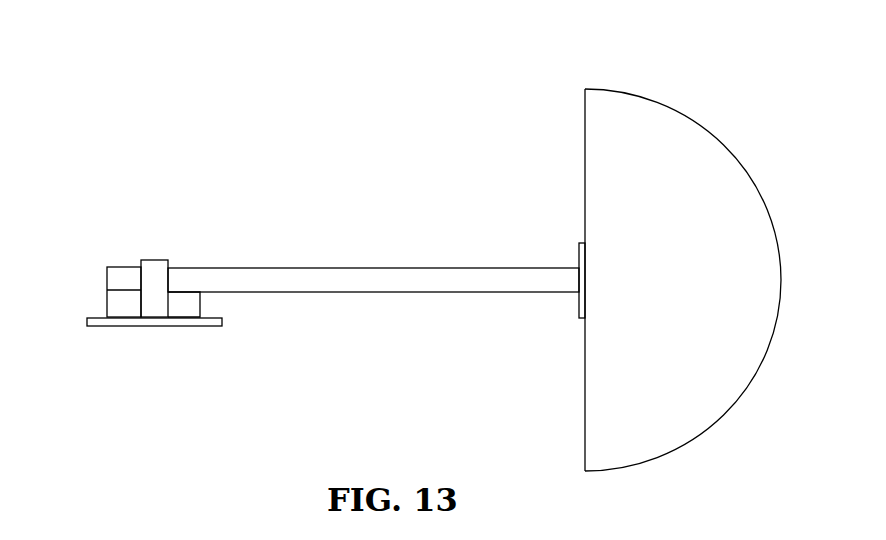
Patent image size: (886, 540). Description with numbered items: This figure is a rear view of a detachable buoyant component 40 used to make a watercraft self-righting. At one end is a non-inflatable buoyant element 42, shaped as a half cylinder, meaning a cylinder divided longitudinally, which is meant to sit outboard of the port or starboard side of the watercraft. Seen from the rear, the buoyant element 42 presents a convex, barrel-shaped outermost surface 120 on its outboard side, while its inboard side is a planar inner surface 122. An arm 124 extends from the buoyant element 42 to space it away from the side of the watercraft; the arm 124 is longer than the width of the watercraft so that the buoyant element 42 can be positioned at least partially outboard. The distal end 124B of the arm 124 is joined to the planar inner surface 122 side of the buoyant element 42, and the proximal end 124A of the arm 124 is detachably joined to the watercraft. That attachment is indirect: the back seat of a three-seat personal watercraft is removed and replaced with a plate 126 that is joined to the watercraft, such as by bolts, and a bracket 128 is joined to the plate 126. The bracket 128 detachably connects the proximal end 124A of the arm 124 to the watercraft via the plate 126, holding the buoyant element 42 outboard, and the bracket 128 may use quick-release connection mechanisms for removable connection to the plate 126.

The light assembly 40 is at (305, 100).
The buoyant element 42 is at (703, 170).
The outermost surface 120 is at (781, 302).
The inner surface 122 is at (585, 397).
The arm 124 is at (357, 280).
The proximal end 124A is at (121, 275).
The distal end 124B is at (577, 268).
The plate 126 is at (213, 320).
The bracket 128 is at (153, 295).